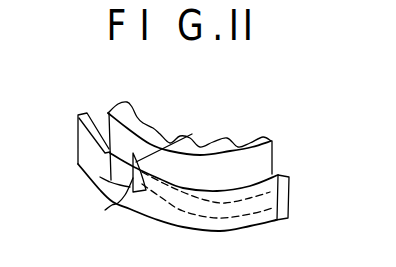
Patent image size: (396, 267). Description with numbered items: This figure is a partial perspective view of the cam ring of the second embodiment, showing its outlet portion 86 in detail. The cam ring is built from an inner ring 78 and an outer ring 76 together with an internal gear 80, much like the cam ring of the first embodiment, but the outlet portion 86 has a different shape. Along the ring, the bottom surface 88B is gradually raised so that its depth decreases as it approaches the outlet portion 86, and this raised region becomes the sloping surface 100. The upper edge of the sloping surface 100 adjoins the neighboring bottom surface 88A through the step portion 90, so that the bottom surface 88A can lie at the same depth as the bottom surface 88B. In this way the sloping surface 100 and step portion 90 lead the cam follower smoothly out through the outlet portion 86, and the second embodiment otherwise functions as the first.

The outer ring 76 is at (219, 211).
The inner ring 78 is at (227, 148).
The internal gear 80 is at (153, 127).
The outlet portion 86 is at (123, 198).
The bottom surface 88A is at (125, 165).
The bottom surface 88B is at (263, 205).
The step portion 90 is at (135, 197).
The sloping surface 100 is at (170, 148).